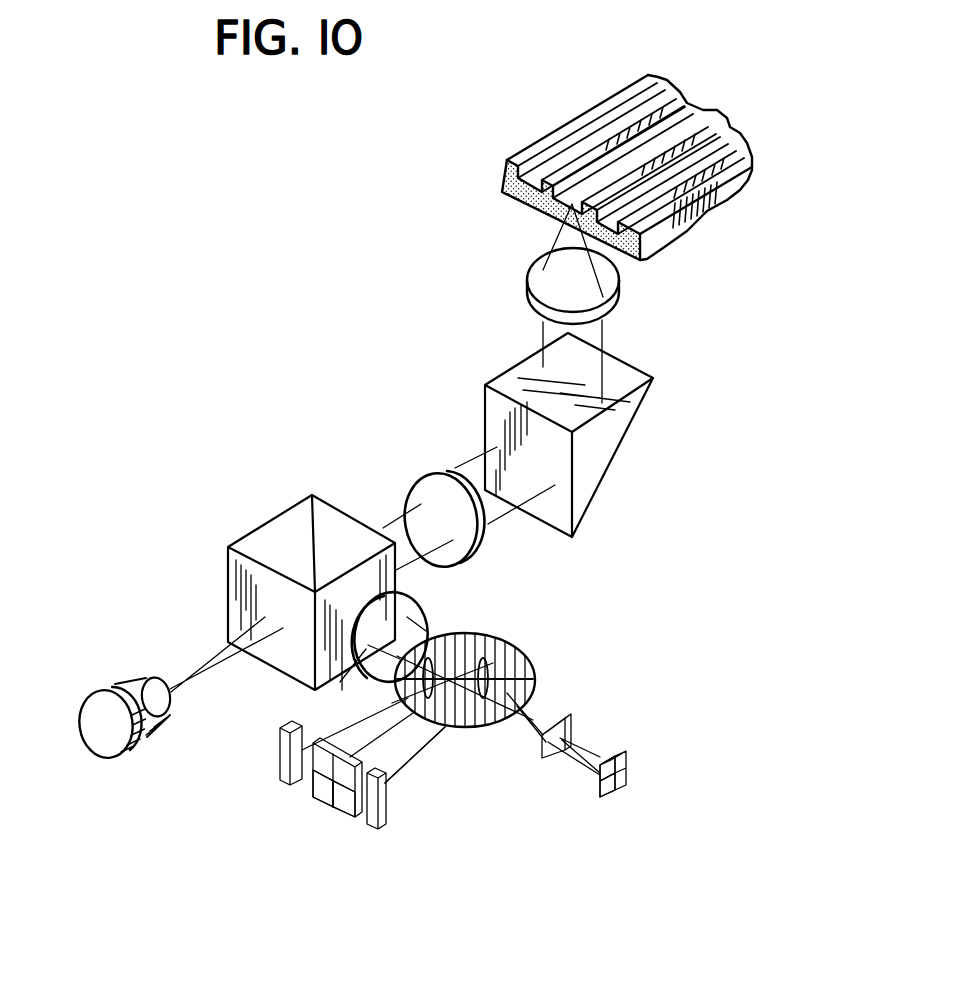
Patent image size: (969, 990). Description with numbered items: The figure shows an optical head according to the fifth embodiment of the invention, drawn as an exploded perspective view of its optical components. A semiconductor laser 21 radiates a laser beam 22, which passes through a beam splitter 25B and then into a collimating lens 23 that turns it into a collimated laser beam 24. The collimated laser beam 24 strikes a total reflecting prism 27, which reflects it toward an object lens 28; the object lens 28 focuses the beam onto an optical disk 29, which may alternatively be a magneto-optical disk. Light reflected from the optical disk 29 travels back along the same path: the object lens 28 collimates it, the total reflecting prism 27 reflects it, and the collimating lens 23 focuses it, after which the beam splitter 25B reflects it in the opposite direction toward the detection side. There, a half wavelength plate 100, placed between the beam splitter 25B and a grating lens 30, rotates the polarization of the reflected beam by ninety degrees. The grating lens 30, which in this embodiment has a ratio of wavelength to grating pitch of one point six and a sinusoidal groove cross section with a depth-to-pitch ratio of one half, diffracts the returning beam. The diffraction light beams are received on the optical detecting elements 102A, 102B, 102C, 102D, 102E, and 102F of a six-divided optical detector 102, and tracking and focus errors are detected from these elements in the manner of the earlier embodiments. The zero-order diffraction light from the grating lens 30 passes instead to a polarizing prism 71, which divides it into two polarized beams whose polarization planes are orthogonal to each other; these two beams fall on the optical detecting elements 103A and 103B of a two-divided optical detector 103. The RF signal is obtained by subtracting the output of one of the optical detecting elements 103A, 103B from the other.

The optical disk 29 is at (510, 158).
The object lens 28 is at (620, 298).
The total reflecting prism 27 is at (598, 453).
The collimated laser beam 24 is at (467, 463).
The collimating lens 23 is at (435, 495).
The beam splitter 25B is at (278, 540).
The laser beam 22 is at (193, 667).
The semiconductor laser 21 is at (113, 745).
The ½ wavelength plate 100 is at (407, 613).
The grating lens 30 is at (500, 637).
The six-divided optical detector 102 is at (347, 902).
The optical detecting element 102A is at (282, 770).
The optical detecting element 102B is at (378, 832).
The optical detecting element 102C is at (322, 757).
The optical detecting element 102D is at (318, 797).
The optical detecting element 102E is at (347, 815).
The optical detecting element 102F is at (400, 768).
The polarizing prism 71 is at (552, 727).
The two-divided optical detector 103 is at (600, 798).
The optical detecting element 103A is at (628, 762).
The optical detecting element 103B is at (618, 782).